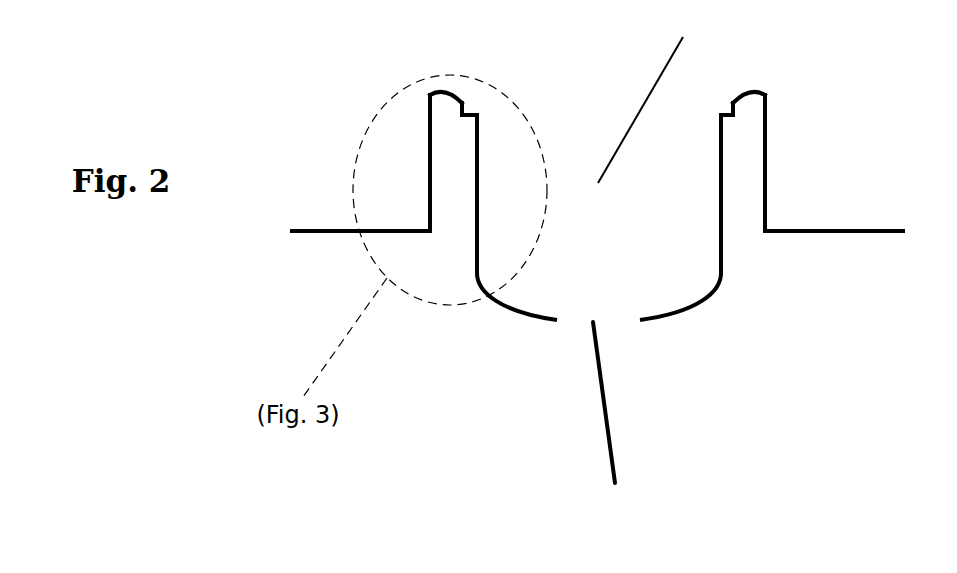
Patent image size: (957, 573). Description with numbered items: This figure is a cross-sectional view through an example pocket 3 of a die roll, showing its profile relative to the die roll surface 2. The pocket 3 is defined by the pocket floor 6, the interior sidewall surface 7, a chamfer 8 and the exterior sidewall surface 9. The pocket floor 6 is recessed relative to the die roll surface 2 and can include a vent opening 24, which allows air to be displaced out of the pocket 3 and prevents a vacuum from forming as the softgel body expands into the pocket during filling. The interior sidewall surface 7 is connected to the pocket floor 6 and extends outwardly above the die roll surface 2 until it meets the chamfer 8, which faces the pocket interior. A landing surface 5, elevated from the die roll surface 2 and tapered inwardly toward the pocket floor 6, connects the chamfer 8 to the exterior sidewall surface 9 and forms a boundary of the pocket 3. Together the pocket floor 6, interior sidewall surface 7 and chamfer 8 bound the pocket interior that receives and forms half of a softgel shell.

The die roll surface 2 is at (313, 230).
The pocket 3 is at (646, 97).
The landing surface 5 is at (447, 95).
The pocket floor 6 is at (513, 310).
The interior sidewall surface 7 is at (478, 167).
The chamfer 8 is at (465, 112).
The exterior sidewall surface 9 is at (428, 168).
The vent opening 24 is at (613, 420).